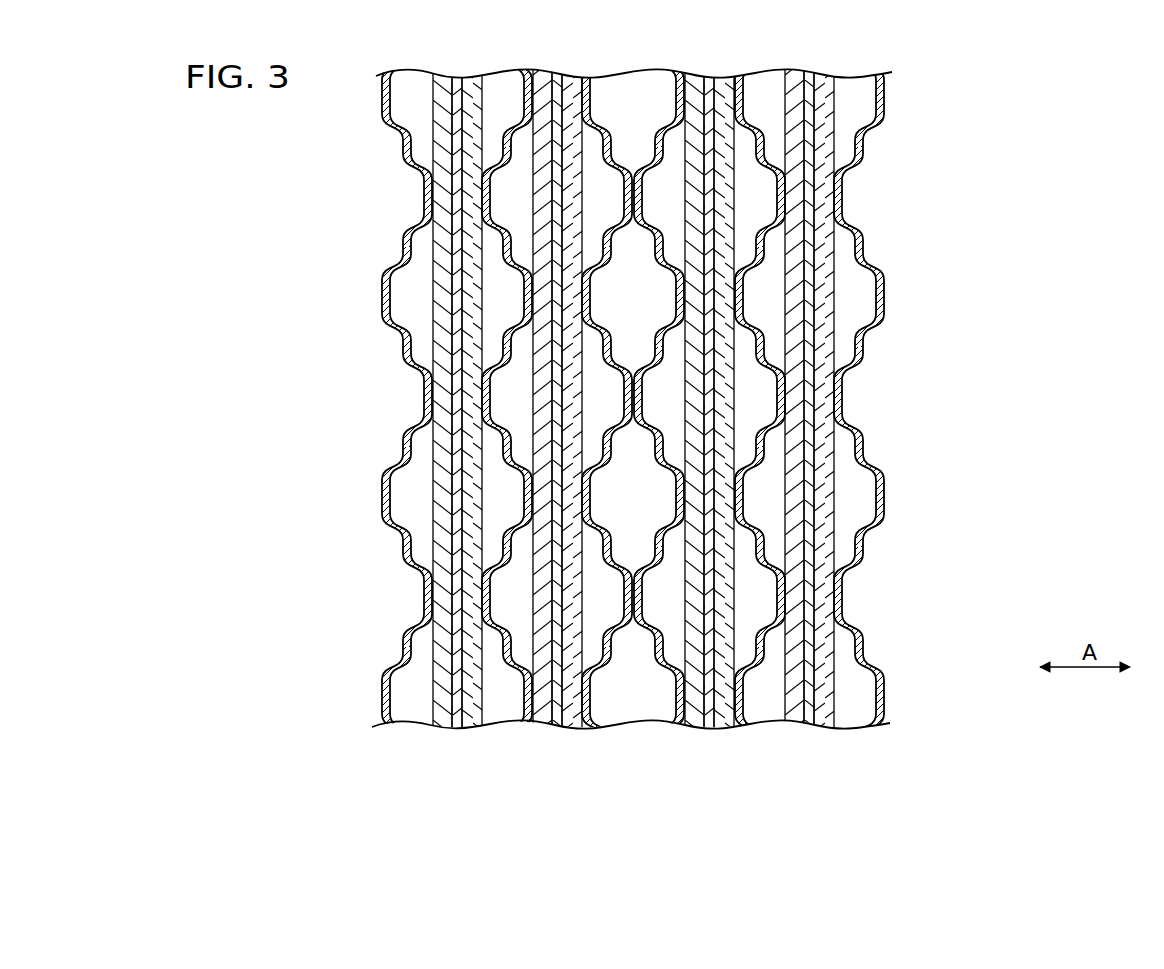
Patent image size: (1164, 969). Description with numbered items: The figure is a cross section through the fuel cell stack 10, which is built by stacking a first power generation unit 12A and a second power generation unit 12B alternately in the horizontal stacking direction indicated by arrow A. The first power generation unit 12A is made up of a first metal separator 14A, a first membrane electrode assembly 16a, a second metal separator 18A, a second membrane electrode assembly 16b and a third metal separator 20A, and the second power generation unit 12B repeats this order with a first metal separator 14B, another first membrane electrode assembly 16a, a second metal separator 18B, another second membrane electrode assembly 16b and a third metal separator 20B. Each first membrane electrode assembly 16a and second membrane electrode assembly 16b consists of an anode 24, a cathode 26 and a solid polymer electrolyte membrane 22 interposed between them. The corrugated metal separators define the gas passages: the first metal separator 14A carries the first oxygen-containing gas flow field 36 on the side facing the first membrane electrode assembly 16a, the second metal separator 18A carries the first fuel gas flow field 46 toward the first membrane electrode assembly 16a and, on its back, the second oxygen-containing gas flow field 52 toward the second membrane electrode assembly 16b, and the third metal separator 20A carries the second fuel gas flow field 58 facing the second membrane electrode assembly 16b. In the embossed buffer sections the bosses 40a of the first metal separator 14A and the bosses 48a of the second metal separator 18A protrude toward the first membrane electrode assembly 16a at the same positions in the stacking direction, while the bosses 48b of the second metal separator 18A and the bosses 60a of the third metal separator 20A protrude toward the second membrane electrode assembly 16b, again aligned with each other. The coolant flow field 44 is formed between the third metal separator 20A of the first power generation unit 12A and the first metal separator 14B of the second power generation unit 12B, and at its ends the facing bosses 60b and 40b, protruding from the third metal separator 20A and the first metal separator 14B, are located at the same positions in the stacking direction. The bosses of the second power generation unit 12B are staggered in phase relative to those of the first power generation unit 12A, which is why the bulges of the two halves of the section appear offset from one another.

The fuel cell stack 10 is at (265, 172).
The first power generation unit 12A is at (578, 790).
The second power generation unit 12B is at (905, 790).
The first metal separator 14A is at (400, 730).
The first metal separator 14B is at (665, 729).
The first membrane electrode assembly 16a is at (553, 417).
The second membrane electrode assembly 16b is at (335, 278).
The second metal separator 18A is at (511, 726).
The second metal separator 18B is at (765, 728).
The third metal separator 20A is at (600, 727).
The third metal separator 20B is at (863, 728).
The solid polymer electrolyte membrane 22 is at (452, 327).
The anode 24 is at (473, 348).
The cathode 26 is at (442, 297).
The first oxygen-containing gas flow field 36 is at (425, 530).
The bosses 40a is at (415, 433).
The bosses 40b is at (382, 468).
The coolant flow field 44 is at (633, 712).
The first fuel gas flow field 46 is at (490, 660).
The bosses 48a is at (527, 610).
The bosses 48b is at (530, 455).
The second oxygen-containing gas flow field 52 is at (493, 590).
The second fuel gas flow field 58 is at (393, 697).
The bosses 60a is at (605, 222).
The bosses 60b is at (662, 262).